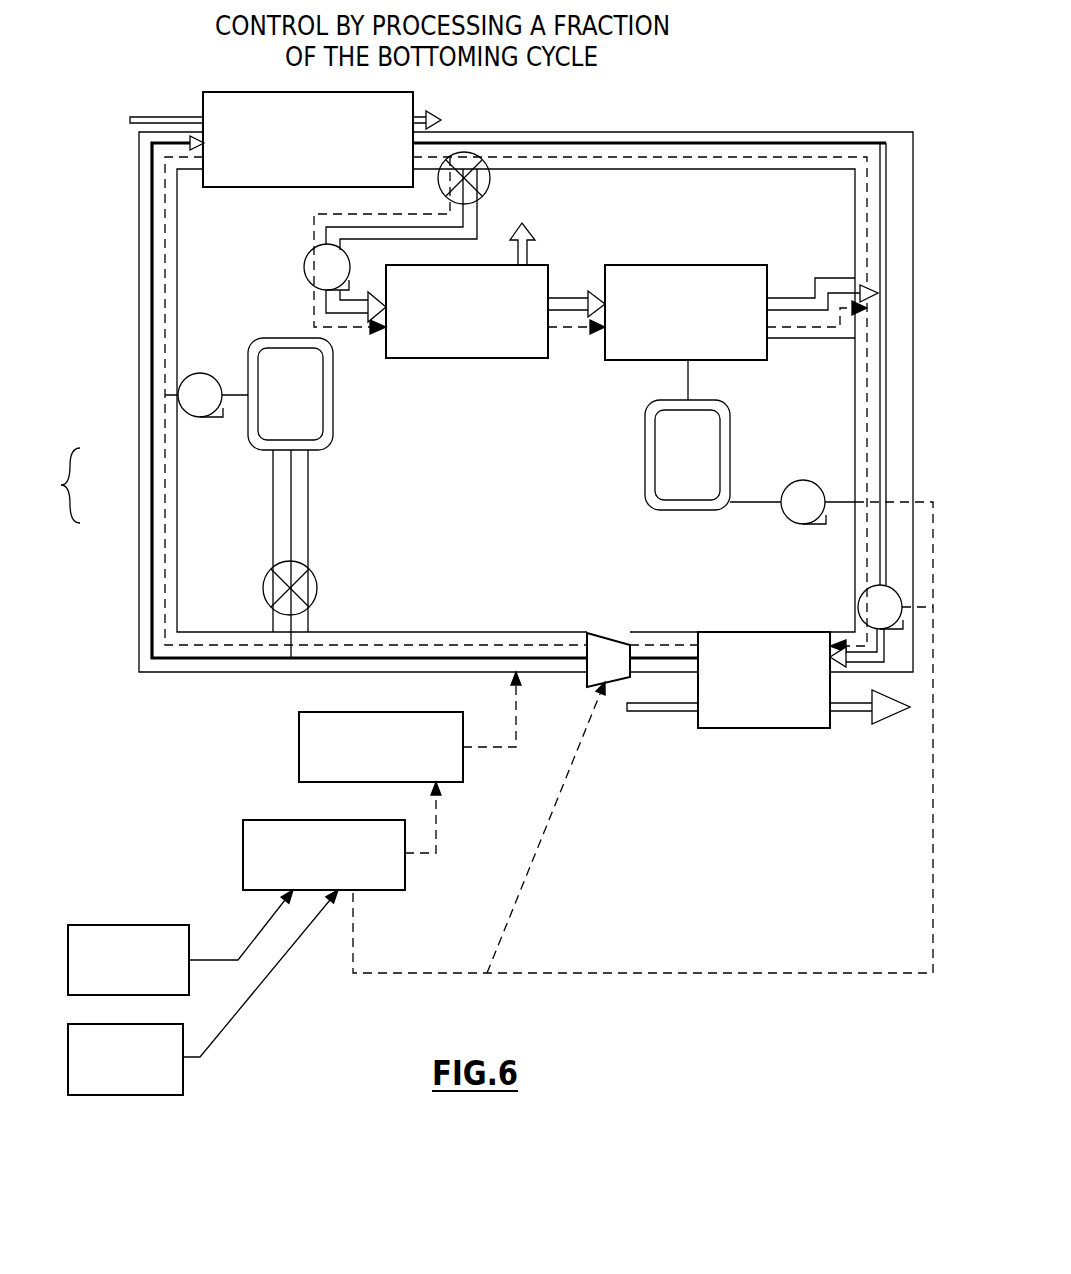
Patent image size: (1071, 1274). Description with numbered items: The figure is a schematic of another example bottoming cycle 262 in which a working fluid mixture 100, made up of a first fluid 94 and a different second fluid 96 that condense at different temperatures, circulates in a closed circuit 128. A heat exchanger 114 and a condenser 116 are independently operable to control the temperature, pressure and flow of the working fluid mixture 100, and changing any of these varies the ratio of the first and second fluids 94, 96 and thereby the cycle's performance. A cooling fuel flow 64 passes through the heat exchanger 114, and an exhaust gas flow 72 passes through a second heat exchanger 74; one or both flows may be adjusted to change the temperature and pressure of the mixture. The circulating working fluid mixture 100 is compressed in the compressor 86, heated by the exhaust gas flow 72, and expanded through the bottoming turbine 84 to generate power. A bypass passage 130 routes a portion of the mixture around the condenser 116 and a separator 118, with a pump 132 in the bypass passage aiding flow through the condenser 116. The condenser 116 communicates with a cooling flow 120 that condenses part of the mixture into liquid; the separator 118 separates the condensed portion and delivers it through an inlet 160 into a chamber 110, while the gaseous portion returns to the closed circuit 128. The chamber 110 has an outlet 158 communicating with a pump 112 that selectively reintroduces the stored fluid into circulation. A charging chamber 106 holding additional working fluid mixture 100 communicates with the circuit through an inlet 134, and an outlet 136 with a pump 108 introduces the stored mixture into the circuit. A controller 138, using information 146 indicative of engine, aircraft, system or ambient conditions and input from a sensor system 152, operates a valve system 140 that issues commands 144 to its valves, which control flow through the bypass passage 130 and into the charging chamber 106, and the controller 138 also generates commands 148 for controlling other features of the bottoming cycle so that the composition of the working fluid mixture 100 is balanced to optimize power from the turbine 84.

The fuel flow 64 is at (172, 118).
The exhaust gas flow 72 is at (655, 712).
The BC top heat exchanger 74 is at (812, 728).
The bottoming turbine 84 is at (606, 633).
The compressor 86 is at (859, 602).
The first fluid 94 is at (140, 481).
The second fluid 96 is at (166, 520).
The working fluid mixture 100 is at (48, 485).
The charging chamber 106 is at (333, 425).
The pump 108 is at (196, 401).
The chamber 110 is at (645, 450).
The pump 112 is at (803, 480).
The heat exchanger 114 is at (213, 92).
The condenser 116 is at (437, 358).
The separator 118 is at (722, 265).
The cooling flow 120 is at (527, 252).
The closed circuit 128 is at (828, 131).
The bypass passage 130 is at (296, 230).
The pump 132 is at (317, 268).
The inlet 134 is at (318, 526).
The outlet 136 is at (231, 366).
The controller 138 is at (243, 835).
The valve system 140 is at (299, 735).
The commands 144 is at (422, 973).
The information 146 is at (163, 925).
The commands 148 is at (491, 752).
The sensor system 152 is at (173, 1095).
The outlet 158 is at (744, 520).
The inlet 160 is at (712, 380).
The bottoming cycle 262 is at (816, 87).